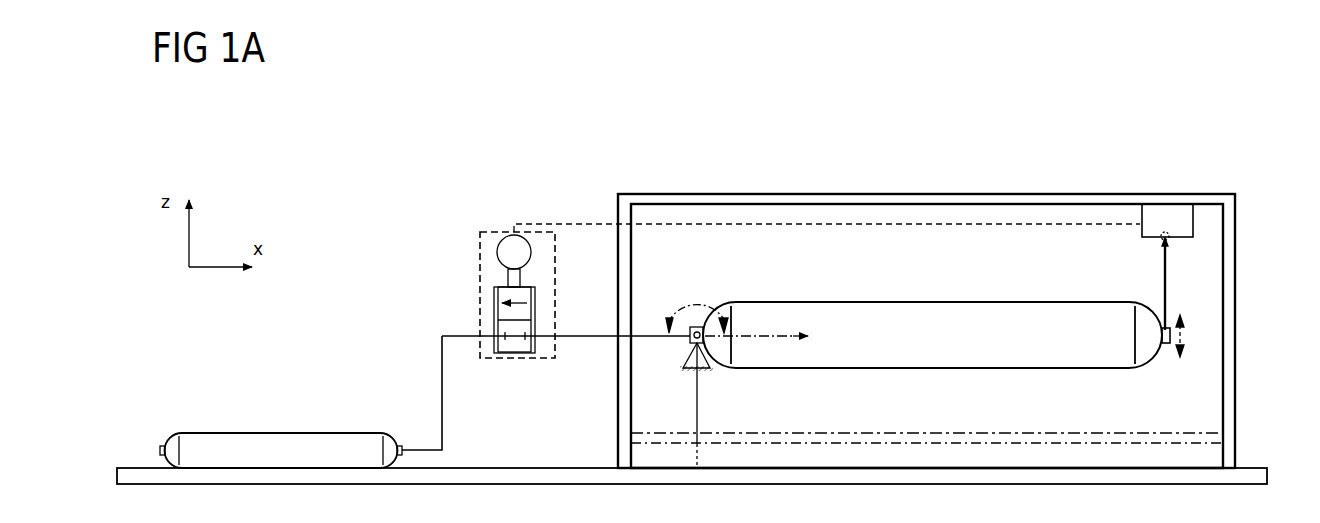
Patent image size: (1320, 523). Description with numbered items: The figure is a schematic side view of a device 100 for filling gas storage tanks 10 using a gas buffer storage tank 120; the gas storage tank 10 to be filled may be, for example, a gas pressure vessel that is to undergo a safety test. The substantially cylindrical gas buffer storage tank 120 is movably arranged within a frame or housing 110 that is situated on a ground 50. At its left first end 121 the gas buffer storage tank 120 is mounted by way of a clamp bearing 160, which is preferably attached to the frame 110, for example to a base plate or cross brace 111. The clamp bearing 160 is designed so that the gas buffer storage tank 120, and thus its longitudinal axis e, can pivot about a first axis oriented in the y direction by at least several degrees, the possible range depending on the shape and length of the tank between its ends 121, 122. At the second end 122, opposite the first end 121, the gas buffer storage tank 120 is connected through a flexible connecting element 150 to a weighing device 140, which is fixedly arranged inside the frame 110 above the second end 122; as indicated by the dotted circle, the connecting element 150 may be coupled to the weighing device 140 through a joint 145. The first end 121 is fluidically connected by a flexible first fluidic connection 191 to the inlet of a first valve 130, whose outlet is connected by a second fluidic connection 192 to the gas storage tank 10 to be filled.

The device 100 is at (757, 147).
The frame 110 is at (672, 202).
The cross brace 111 is at (843, 432).
The gas buffer storage tank 120 is at (1012, 315).
The first end 121 is at (704, 297).
The second end 122 is at (1170, 366).
The first valve 130 is at (490, 232).
The weighing device 140 is at (1142, 233).
The joint 145 is at (1169, 239).
The flexible connecting element 150 is at (1163, 277).
The clamp bearing 160 is at (681, 355).
The first fluidic connection 191 is at (590, 338).
The second fluidic connection 192 is at (443, 422).
The gas storage tank 10 is at (265, 447).
The ground 50 is at (125, 472).